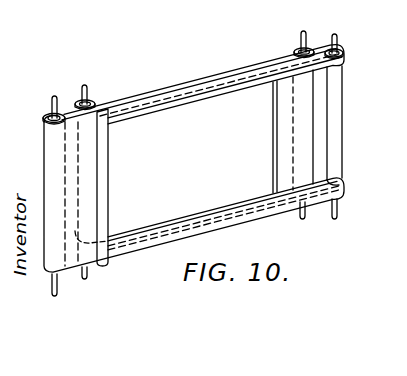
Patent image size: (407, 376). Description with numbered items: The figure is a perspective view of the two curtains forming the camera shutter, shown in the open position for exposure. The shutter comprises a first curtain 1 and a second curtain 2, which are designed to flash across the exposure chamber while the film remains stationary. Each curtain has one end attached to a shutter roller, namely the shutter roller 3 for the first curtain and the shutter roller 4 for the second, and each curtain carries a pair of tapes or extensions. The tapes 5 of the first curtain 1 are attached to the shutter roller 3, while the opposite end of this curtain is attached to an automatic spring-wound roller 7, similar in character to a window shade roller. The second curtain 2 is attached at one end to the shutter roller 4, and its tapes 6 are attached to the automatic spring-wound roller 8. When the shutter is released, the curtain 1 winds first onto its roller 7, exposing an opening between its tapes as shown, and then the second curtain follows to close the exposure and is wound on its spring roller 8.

The curtain 1 is at (283, 121).
The curtain 2 is at (83, 161).
The shutter roller 3 is at (91, 97).
The shutter roller 4 is at (46, 116).
The tapes 5 is at (171, 84).
The tapes 6 is at (195, 100).
The spring-wound roller 7 is at (296, 47).
The spring-wound roller 8 is at (342, 47).